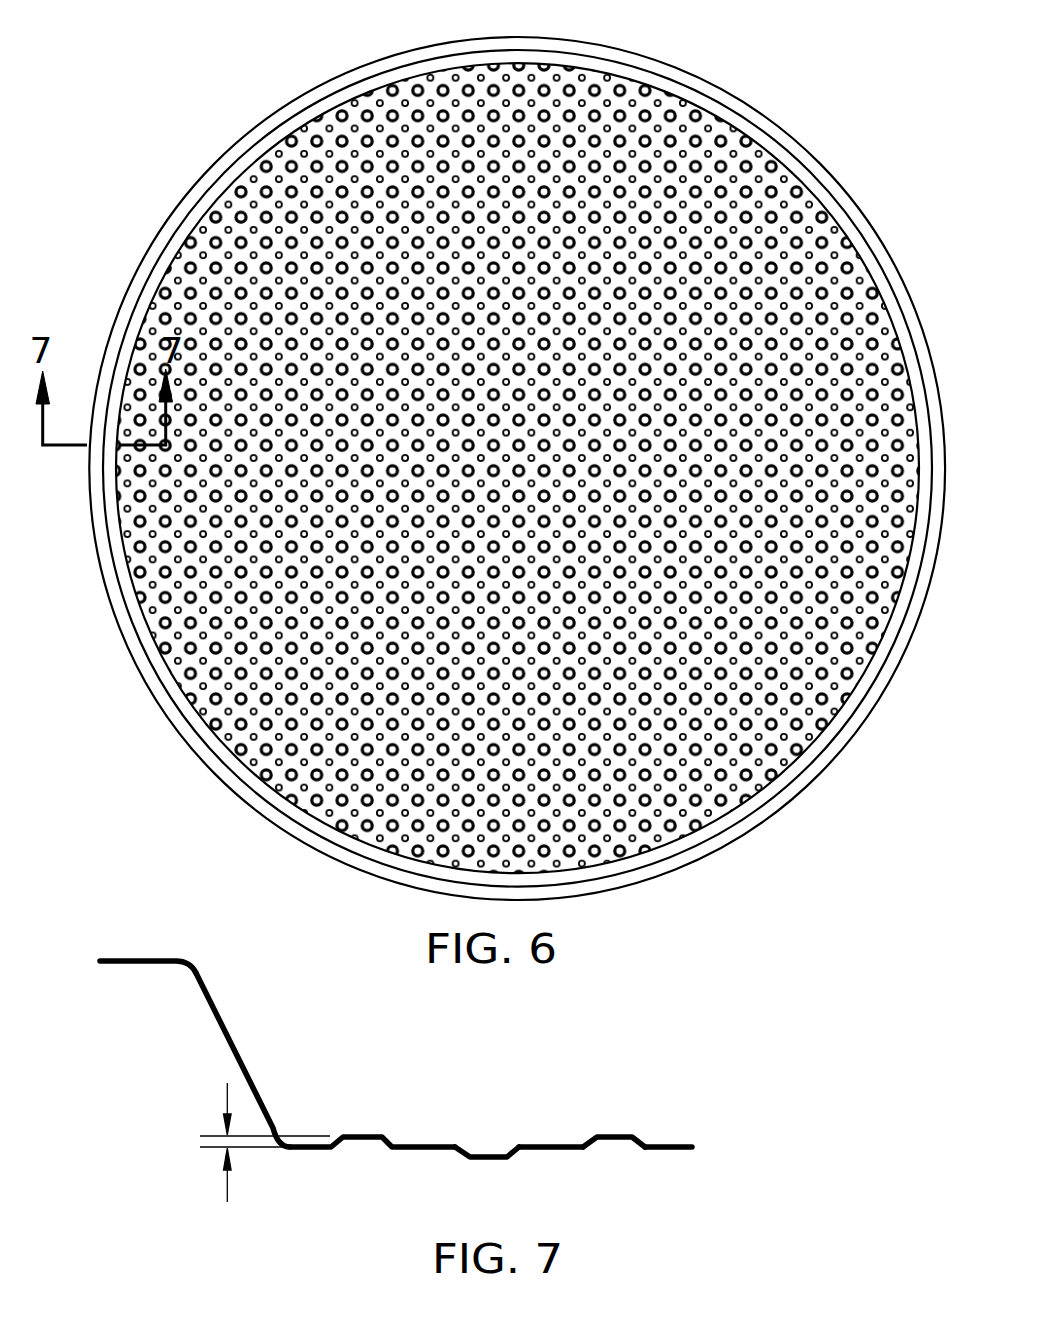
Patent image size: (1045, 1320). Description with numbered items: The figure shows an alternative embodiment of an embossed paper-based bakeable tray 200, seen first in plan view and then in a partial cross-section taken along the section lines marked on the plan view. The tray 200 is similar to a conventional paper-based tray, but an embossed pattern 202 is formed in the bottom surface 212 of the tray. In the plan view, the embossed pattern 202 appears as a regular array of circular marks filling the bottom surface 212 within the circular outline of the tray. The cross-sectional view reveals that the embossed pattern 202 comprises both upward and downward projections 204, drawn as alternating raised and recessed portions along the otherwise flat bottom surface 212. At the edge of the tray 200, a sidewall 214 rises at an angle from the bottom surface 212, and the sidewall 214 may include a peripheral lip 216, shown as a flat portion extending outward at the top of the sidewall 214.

In FIG. 6, the embossed paper-based bakeable tray 200 is at (843, 97).
In FIG. 6, the embossed pattern 202 is at (280, 165).
In FIG. 7, the upward and downward projections 204 is at (603, 1135).
In FIG. 7, the bottom surface 212 is at (672, 1145).
In FIG. 7, the sidewalls 214 is at (212, 1005).
In FIG. 7, the peripheral lip 216 is at (130, 960).